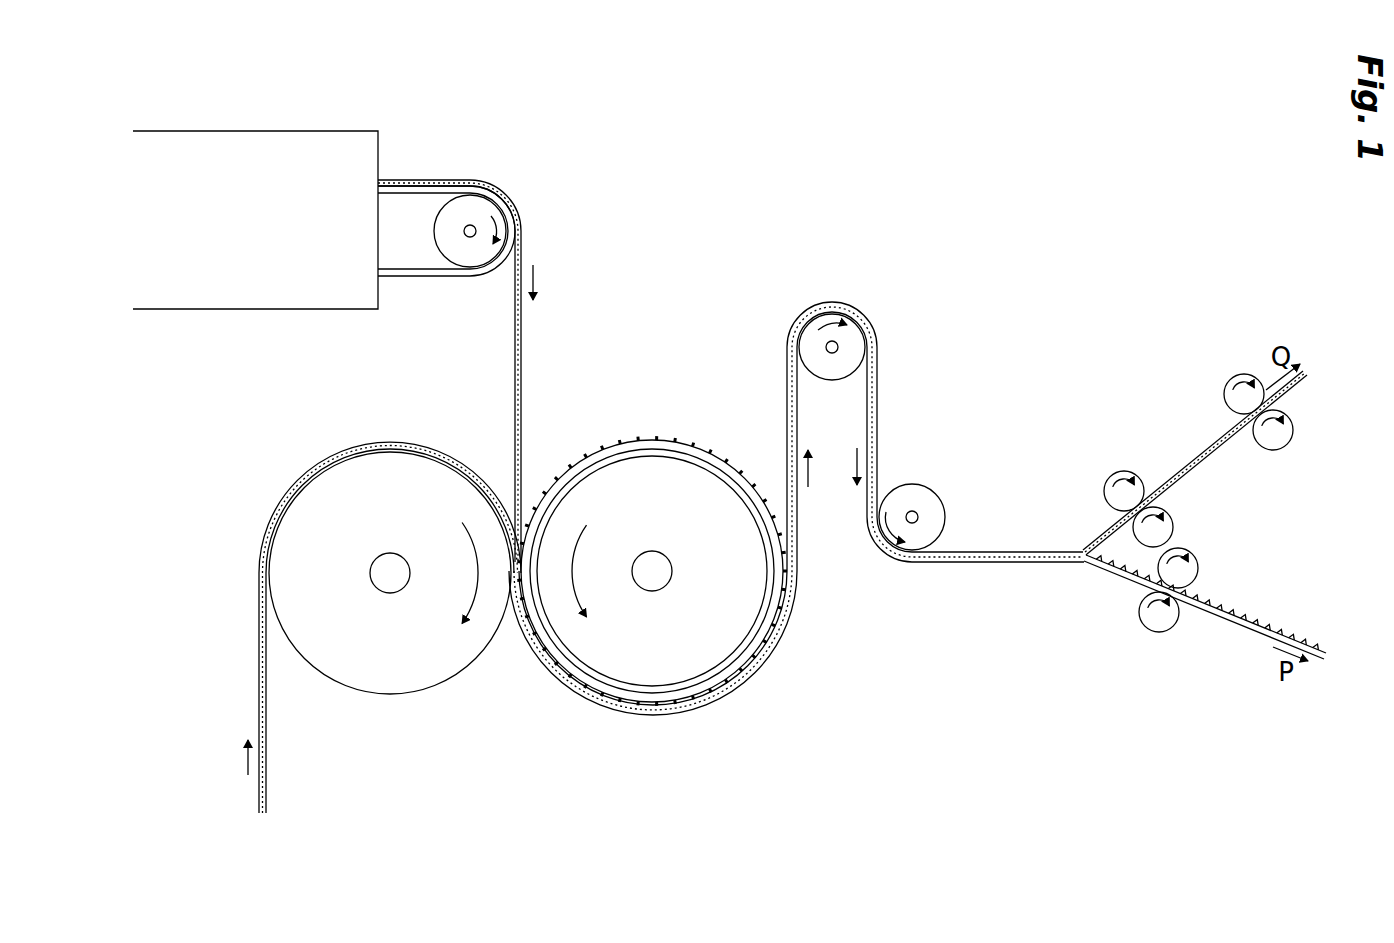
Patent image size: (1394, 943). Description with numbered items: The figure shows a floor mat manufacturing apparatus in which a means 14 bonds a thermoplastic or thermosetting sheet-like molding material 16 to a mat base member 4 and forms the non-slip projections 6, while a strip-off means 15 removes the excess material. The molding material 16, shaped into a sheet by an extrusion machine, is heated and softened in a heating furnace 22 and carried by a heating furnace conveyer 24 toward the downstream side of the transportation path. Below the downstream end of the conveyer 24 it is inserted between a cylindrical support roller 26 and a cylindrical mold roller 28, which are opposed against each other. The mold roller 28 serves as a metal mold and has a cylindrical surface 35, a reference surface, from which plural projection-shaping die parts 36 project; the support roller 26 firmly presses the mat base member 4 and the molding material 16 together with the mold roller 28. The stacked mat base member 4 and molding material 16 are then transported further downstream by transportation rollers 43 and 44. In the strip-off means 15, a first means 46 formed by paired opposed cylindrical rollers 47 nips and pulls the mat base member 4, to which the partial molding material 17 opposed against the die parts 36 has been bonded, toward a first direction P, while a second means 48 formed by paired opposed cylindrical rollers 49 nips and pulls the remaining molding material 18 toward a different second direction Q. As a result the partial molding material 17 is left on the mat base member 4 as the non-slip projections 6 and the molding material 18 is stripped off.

The mat base member 4 is at (261, 686).
The non-slip projections 6 is at (1213, 592).
The bonding and shaping means 14 is at (496, 728).
The strip-off means 15 is at (1114, 366).
The molding material 16 is at (524, 346).
The partial molding material 17 is at (1255, 613).
The stripped molding material 18 is at (1210, 450).
The heating furnace 22 is at (283, 160).
The heating furnace conveyer 24 is at (418, 273).
The cylindrical support roller 26 is at (399, 680).
The cylindrical mold roller 28 is at (652, 511).
The cylindrical surface 35 is at (644, 433).
The projection-shaping die parts 36 is at (568, 463).
The transportation roller 43 is at (833, 370).
The transportation roller 44 is at (912, 490).
The first means 46 is at (1179, 620).
The cylindrical rollers 47 is at (1194, 560).
The second means 48 is at (1179, 403).
The cylindrical rollers 49 is at (1247, 384).